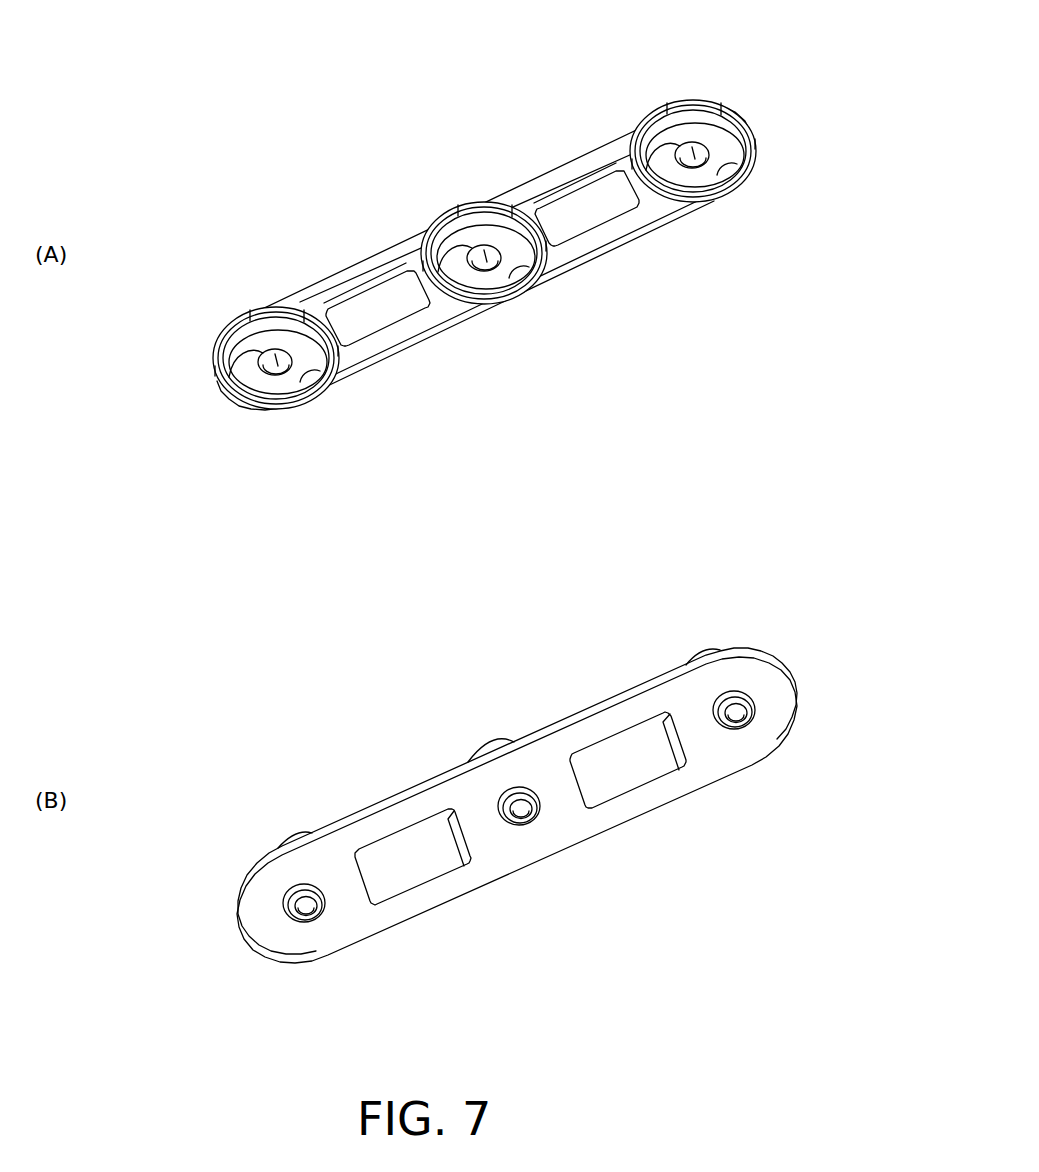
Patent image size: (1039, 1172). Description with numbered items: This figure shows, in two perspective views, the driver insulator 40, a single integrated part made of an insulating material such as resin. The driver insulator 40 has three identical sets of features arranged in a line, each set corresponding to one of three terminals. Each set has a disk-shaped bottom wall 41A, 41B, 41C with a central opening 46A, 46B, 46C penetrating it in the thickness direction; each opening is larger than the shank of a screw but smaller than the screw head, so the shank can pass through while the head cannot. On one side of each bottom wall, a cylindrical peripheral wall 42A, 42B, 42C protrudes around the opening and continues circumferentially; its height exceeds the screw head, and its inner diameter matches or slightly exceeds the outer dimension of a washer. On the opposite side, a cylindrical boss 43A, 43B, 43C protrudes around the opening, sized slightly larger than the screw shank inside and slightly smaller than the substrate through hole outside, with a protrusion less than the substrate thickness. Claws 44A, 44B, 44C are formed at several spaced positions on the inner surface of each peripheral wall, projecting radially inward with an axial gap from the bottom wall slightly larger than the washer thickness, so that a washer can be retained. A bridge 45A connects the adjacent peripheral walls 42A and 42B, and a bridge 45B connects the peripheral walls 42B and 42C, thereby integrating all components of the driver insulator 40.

The driver insulator 40 is at (278, 143).
The bottom wall 41A is at (266, 342).
The bottom wall 41B is at (468, 238).
The bottom wall 41C is at (687, 133).
The peripheral wall 42A is at (216, 340).
The peripheral wall 42B is at (431, 232).
The peripheral wall 42C is at (645, 123).
The boss 43A is at (307, 926).
The boss 43B is at (522, 828).
The boss 43C is at (737, 735).
The claw 44A is at (303, 310).
The claw 44B is at (513, 210).
The claw 44C is at (722, 122).
The bridge 45A is at (407, 362).
The bridge 45B is at (621, 248).
The opening 46A is at (229, 378).
The opening 46B is at (441, 286).
The opening 46C is at (649, 180).